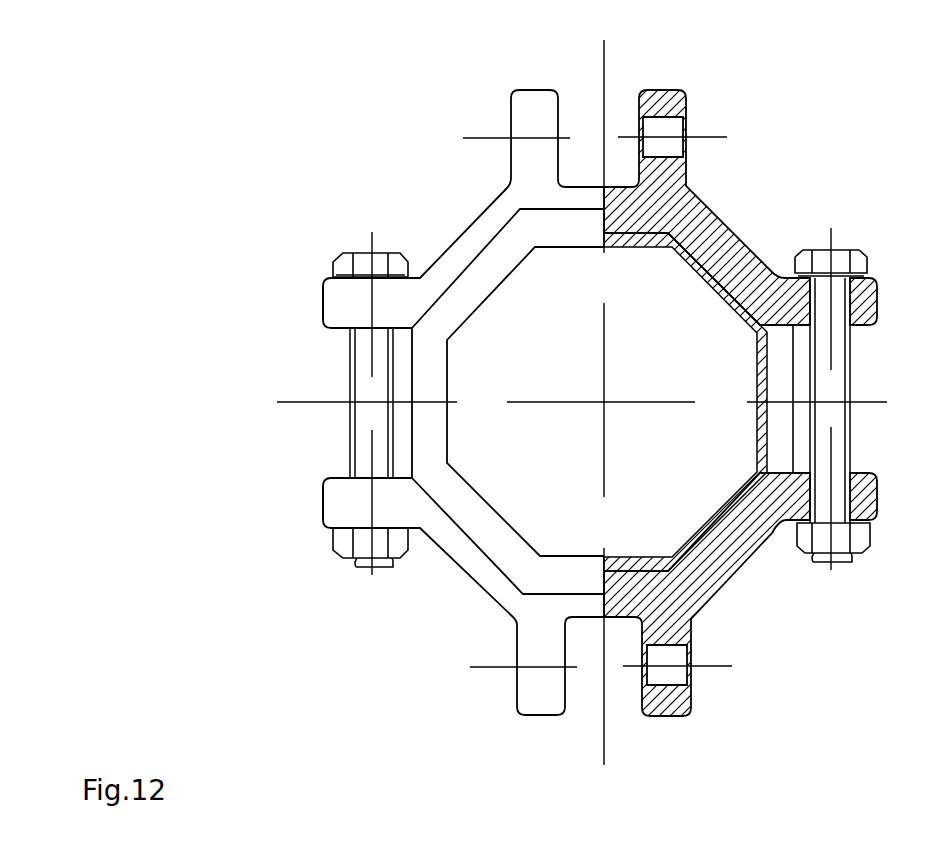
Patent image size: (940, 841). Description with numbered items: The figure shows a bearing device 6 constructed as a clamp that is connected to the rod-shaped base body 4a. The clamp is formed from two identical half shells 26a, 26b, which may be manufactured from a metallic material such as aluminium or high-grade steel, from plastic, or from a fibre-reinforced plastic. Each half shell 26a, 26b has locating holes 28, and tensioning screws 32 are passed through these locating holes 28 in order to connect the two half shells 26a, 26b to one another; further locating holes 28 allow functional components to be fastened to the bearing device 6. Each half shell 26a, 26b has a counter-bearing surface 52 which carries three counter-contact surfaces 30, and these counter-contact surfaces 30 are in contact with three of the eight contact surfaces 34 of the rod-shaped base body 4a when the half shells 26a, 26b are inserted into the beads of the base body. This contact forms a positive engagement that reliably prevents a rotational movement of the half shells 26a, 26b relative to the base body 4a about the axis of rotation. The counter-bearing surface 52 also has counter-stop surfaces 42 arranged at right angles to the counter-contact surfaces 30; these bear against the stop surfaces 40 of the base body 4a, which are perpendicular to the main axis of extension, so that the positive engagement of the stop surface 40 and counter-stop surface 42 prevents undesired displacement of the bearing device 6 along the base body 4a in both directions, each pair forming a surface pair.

The bearing device 6 is at (802, 127).
The half shell 26a is at (342, 298).
The half shell 26b is at (340, 503).
The locating hole 28 is at (637, 128).
The counter-contact surface 30 is at (423, 418).
The tensioning screw 32 is at (350, 379).
The contact surface 34 is at (723, 293).
The rod-shaped base body 4a is at (485, 283).
The stop surface 40 is at (493, 462).
The counter-stop surface 42 is at (495, 507).
The counter-bearing surface 52 is at (718, 202).